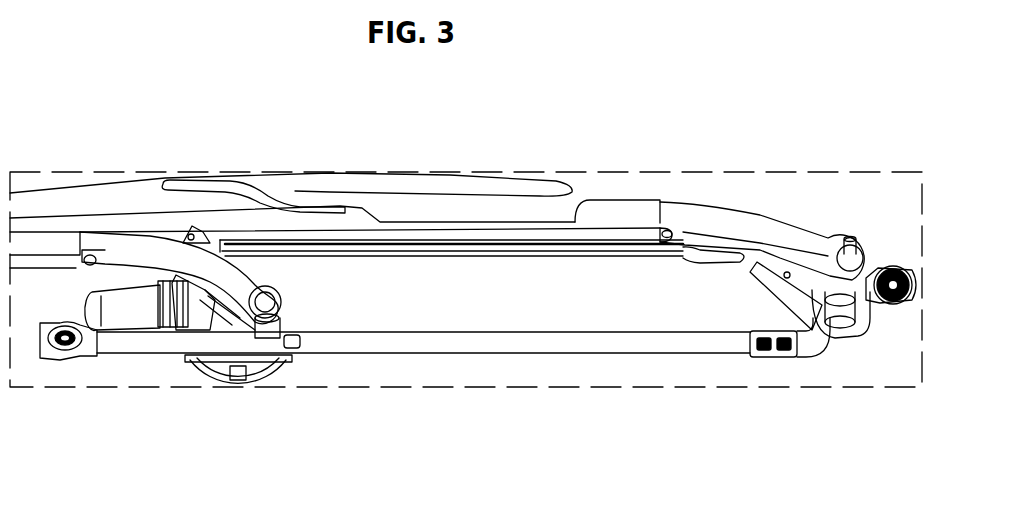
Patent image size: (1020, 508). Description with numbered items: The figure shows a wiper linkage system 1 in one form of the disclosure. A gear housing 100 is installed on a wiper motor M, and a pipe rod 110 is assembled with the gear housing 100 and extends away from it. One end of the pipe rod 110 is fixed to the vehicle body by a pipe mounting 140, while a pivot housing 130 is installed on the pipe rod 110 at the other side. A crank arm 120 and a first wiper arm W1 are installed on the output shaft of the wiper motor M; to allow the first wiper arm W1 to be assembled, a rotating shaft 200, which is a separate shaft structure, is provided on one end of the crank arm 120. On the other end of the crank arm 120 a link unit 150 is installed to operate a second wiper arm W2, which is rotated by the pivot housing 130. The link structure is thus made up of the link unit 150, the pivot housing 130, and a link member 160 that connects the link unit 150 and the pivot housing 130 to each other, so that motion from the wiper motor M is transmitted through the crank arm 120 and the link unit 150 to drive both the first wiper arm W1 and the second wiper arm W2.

The wiper linkage system 1 is at (653, 387).
The first wiper arm W1 is at (147, 243).
The second wiper arm W2 is at (640, 214).
The wiper motor M is at (127, 318).
The gear housing 100 is at (237, 377).
The pipe rod 110 is at (417, 342).
The crank arm 120 is at (196, 345).
The pivot housing 130 is at (840, 325).
The pipe mounting 140 is at (73, 358).
The link unit 150 is at (547, 253).
The link member 160 is at (797, 277).
The rotating shaft 200 is at (287, 350).